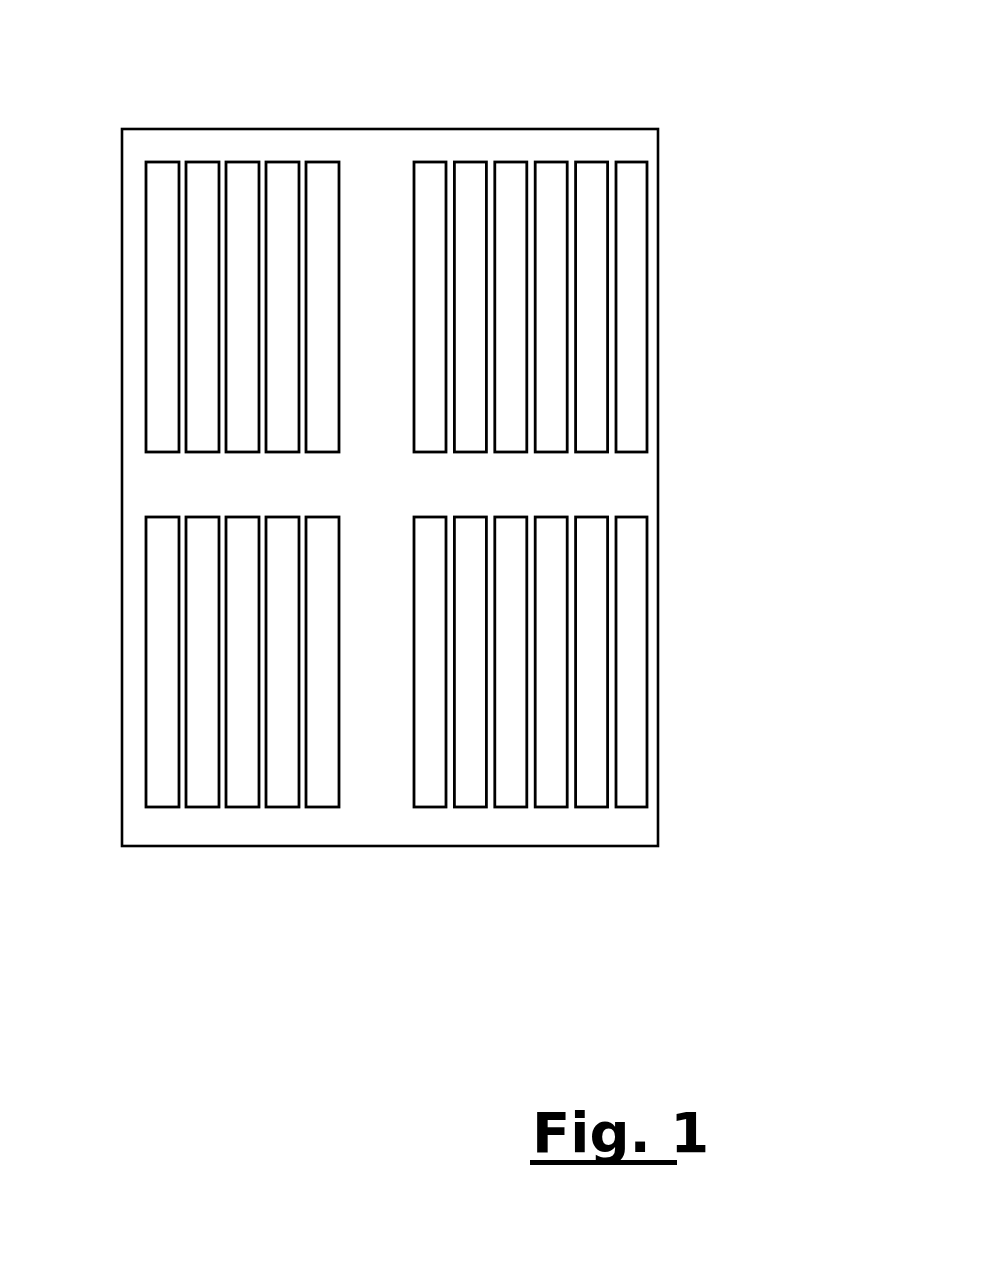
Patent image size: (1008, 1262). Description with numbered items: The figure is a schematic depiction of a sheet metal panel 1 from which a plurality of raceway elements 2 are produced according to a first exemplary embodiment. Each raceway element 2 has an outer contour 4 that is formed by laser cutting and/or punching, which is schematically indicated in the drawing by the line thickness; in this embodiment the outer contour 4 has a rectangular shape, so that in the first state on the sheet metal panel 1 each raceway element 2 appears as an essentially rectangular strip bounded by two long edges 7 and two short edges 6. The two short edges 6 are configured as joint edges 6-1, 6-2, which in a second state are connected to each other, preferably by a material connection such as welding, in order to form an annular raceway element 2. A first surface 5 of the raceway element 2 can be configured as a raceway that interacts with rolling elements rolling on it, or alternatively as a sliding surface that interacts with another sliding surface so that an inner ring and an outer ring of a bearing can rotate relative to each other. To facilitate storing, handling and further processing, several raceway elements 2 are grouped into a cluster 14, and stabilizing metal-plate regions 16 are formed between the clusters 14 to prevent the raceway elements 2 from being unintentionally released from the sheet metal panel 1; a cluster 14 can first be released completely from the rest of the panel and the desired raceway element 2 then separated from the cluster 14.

The sheet metal panel 1 is at (692, 100).
The raceway element 2 is at (325, 137).
The outer contour 4 is at (672, 418).
The first surface 5 is at (628, 290).
The short edge 6 is at (587, 452).
The joint edge 6-1 is at (630, 480).
The joint edge 6-2 is at (632, 138).
The long edge 7 is at (668, 358).
The cluster 14 is at (682, 818).
The stabilizing metal-plate region 16 is at (158, 493).